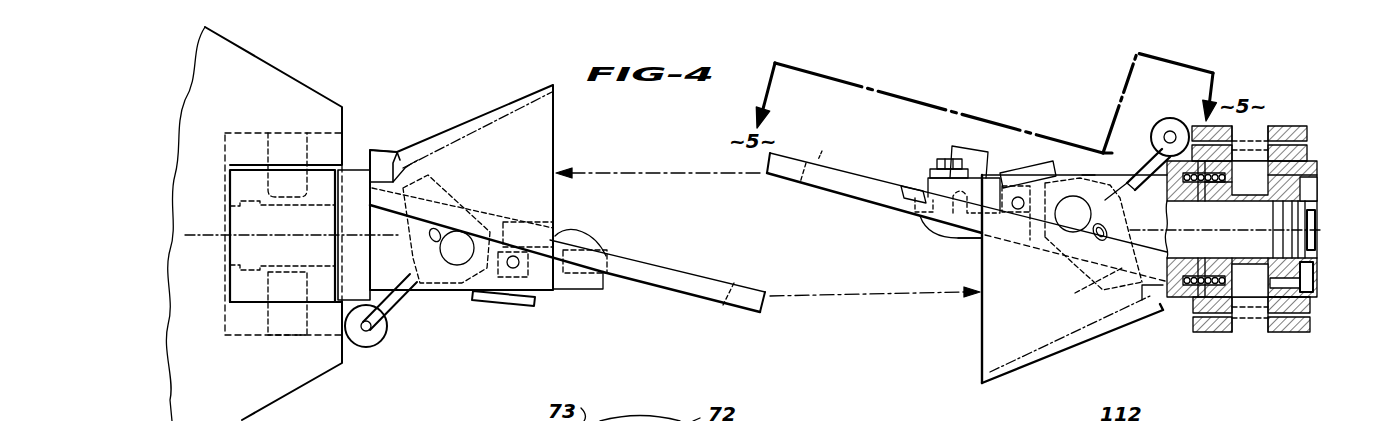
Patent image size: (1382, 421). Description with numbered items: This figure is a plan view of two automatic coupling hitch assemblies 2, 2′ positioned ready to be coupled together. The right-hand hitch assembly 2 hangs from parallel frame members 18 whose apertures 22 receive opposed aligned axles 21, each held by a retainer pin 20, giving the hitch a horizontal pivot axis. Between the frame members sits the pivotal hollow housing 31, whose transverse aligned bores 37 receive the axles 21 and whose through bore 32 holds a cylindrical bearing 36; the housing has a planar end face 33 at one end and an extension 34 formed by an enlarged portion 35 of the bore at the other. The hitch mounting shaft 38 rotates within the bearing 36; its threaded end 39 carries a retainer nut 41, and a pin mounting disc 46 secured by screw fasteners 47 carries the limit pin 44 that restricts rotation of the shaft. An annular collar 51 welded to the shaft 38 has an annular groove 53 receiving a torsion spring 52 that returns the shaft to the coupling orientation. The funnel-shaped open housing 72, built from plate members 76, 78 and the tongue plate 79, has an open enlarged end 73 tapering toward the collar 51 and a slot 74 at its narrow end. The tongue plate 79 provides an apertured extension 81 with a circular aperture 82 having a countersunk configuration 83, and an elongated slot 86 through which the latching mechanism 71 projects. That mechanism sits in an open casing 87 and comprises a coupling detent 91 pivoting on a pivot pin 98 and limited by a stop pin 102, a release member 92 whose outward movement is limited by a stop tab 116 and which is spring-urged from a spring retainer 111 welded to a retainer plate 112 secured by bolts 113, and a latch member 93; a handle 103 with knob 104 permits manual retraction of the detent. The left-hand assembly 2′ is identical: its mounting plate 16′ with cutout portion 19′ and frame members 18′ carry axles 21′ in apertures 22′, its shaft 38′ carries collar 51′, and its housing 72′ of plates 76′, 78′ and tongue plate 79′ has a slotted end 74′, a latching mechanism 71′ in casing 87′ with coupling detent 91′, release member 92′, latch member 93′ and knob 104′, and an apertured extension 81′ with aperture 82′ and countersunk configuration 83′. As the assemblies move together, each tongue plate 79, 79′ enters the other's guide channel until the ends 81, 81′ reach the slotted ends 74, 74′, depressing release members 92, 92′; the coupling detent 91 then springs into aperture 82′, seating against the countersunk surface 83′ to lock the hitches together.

The mounting plate 16′ is at (278, 72).
The frame members 18′ is at (355, 168).
The cutout portion 19′ is at (248, 290).
The axles 21′ is at (296, 134).
The apertures 22′ is at (272, 140).
The hitch mounting shaft 38′ is at (280, 243).
The annular collar 51′ is at (386, 172).
The open housing 72′ is at (556, 126).
The slotted end 74′ is at (408, 160).
The plate member 76′ is at (514, 178).
The plate member 78′ is at (513, 108).
The coupling detent member 91′ is at (442, 192).
The knob 104′ is at (373, 336).
The hitch assembly 2′ is at (457, 307).
The latch member 93′ is at (484, 300).
The latching mechanism 71′ is at (529, 307).
The open casing 87′ is at (585, 282).
The detent release member 92′ is at (572, 236).
The tongue plate 79′ is at (641, 264).
The apertured extension 81′ is at (758, 288).
The countersunk configuration 83′ is at (737, 280).
The aperture 82′ is at (722, 305).
The tongue plate 79 is at (884, 184).
The apertured extension 81 is at (790, 165).
The circular aperture 82 is at (808, 170).
The countersunk configuration 83 is at (803, 180).
The hitch assembly 2 is at (860, 152).
The stop tab 116 is at (917, 171).
The retainer plate 112 is at (928, 171).
The bolts 113 is at (943, 157).
The spring retainer 111 is at (985, 148).
The slot 86 is at (916, 218).
The detent release member 92 is at (942, 237).
The open enlarged end 73 is at (981, 258).
The open housing 72 is at (984, 322).
The plate member 78 is at (1063, 336).
The plate member 76 is at (1022, 311).
The slot 74 is at (1150, 306).
The pivot pin 98 is at (1066, 232).
The coupling detent member 91 is at (1092, 283).
The stop pin 102 is at (1110, 230).
The latch member 93 is at (1042, 170).
The latching mechanism 71 is at (999, 150).
The open casing 87 is at (1088, 173).
The knob 104 is at (1172, 118).
The handle 103 is at (1122, 184).
The annular collar 51 is at (1156, 148).
The frame members 18 is at (1307, 130).
The retainer pin 20 is at (1307, 148).
The axles 21 is at (1250, 152).
The apertures 22 is at (1270, 146).
The aligned bores 37 is at (1232, 170).
The annular groove 53 is at (1198, 190).
The end face 33 is at (1210, 192).
The through bore 32 is at (1218, 196).
The extension 34 is at (1318, 166).
The enlarged portion 35 is at (1319, 184).
The pin mounting disc 46 is at (1318, 202).
The shaft end 39 is at (1312, 212).
The screw fasteners 47 is at (1315, 230).
The cylindrical bearing 36 is at (1258, 264).
The hitch mounting shaft 38 is at (1225, 258).
The torsion spring 52 is at (1222, 286).
The retainer nut 41 is at (1302, 275).
The limit pin 44 is at (1314, 285).
The hollow housing 31 is at (1288, 305).